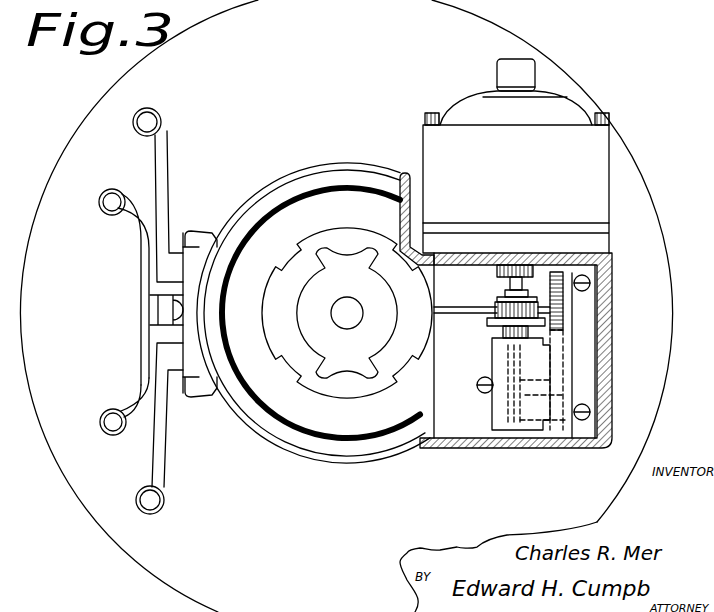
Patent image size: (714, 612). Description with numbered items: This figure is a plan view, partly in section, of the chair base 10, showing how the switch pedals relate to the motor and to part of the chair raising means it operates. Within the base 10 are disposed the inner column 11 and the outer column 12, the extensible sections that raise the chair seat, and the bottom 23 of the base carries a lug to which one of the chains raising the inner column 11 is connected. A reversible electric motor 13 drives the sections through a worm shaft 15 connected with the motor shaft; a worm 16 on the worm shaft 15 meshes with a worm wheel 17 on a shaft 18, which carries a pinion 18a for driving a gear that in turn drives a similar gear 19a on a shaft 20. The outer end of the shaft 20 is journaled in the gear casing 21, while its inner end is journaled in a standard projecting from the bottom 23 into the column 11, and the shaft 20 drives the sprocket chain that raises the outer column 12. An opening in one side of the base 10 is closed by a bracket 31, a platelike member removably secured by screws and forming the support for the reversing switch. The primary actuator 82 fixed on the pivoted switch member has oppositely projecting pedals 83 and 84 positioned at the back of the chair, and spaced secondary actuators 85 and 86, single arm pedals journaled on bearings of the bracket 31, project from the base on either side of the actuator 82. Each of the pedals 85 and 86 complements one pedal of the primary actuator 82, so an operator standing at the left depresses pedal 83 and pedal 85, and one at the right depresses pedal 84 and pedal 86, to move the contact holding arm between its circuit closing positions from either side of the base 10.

The base 10 is at (333, 452).
The inner column 11 is at (358, 353).
The outer column 12 is at (344, 391).
The reversible electric motor 13 is at (542, 163).
The worm shaft 15 is at (497, 280).
The worm 16 is at (502, 372).
The worm wheel 17 is at (495, 412).
The shaft 18 is at (528, 437).
The pinion 18a is at (578, 380).
The gear 19a is at (558, 275).
The drive shaft 20 is at (468, 306).
The gear casing 21 is at (571, 340).
The bottom of the base 23 is at (93, 481).
The bracket 31 is at (198, 397).
The primary actuator 82 is at (150, 313).
The pedal 83 is at (128, 180).
The pedal 84 is at (113, 410).
The secondary actuator 85 is at (162, 119).
The secondary actuator 86 is at (163, 503).